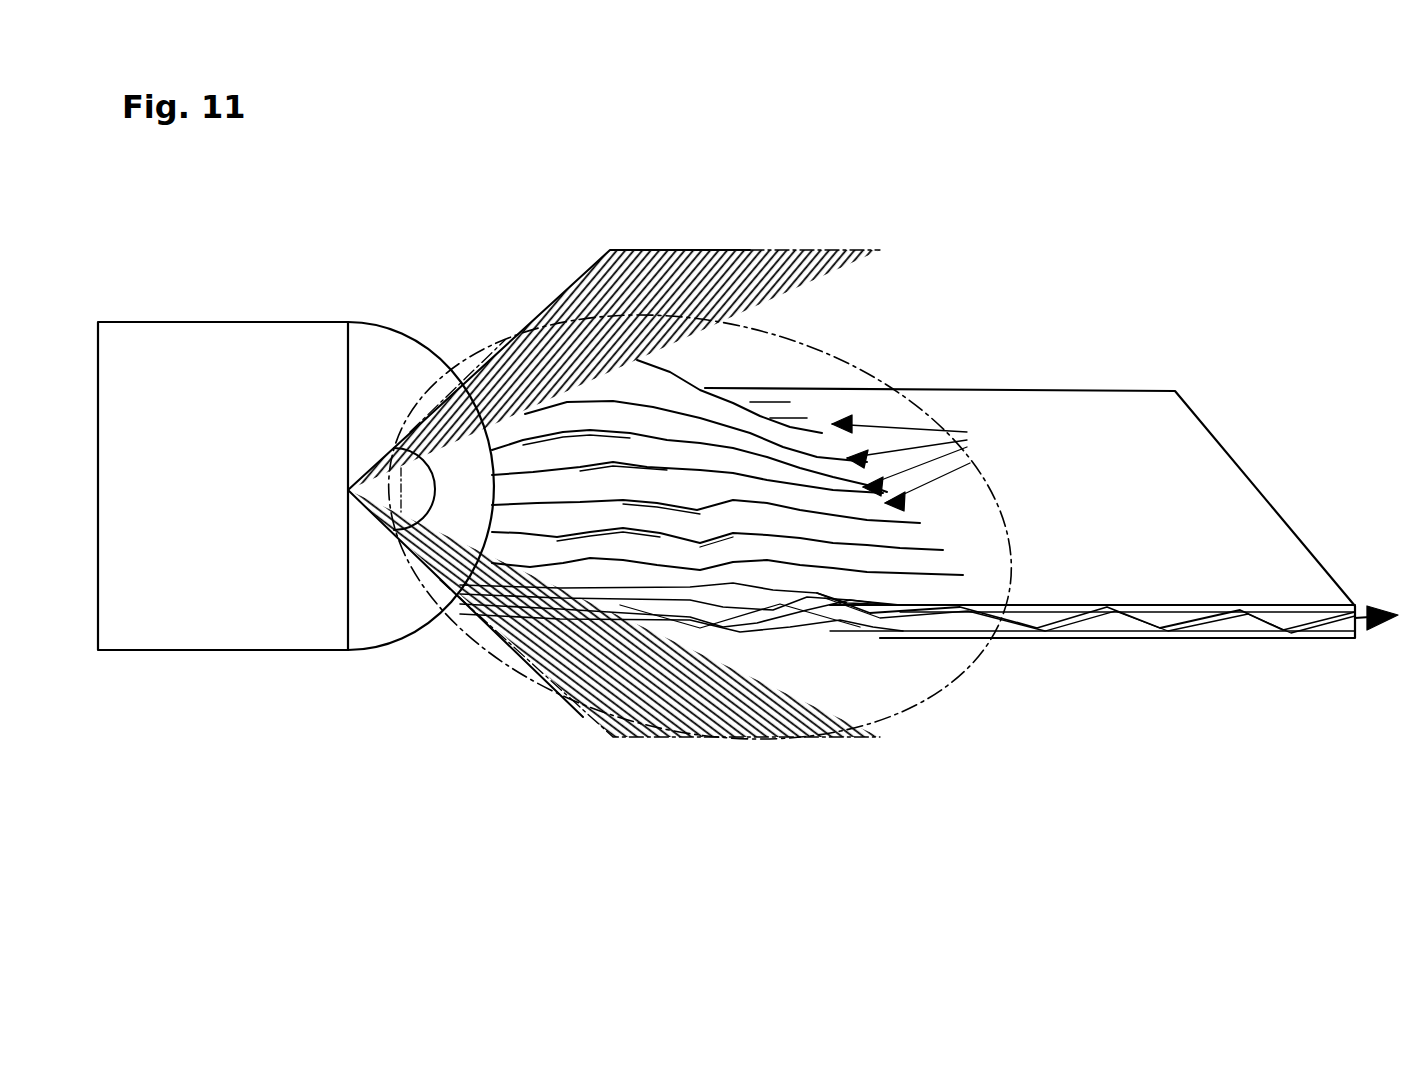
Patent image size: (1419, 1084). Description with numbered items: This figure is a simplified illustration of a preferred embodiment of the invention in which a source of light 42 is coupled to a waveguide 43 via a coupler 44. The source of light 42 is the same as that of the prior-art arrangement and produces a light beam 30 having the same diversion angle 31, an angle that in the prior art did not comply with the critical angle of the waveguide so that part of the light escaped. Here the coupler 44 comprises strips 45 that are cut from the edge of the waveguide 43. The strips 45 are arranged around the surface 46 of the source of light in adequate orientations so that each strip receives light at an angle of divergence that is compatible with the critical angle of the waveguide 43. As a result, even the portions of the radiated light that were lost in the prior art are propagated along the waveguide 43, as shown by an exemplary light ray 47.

The source of light 42 is at (283, 321).
The surface of the source of light 46 is at (389, 339).
The light beam 30 is at (348, 490).
The diversion angle 31 is at (382, 506).
The coupler 44 is at (835, 372).
The waveguide 43 is at (1052, 391).
The strips 45 is at (750, 467).
The exemplary light ray 47 is at (1100, 631).